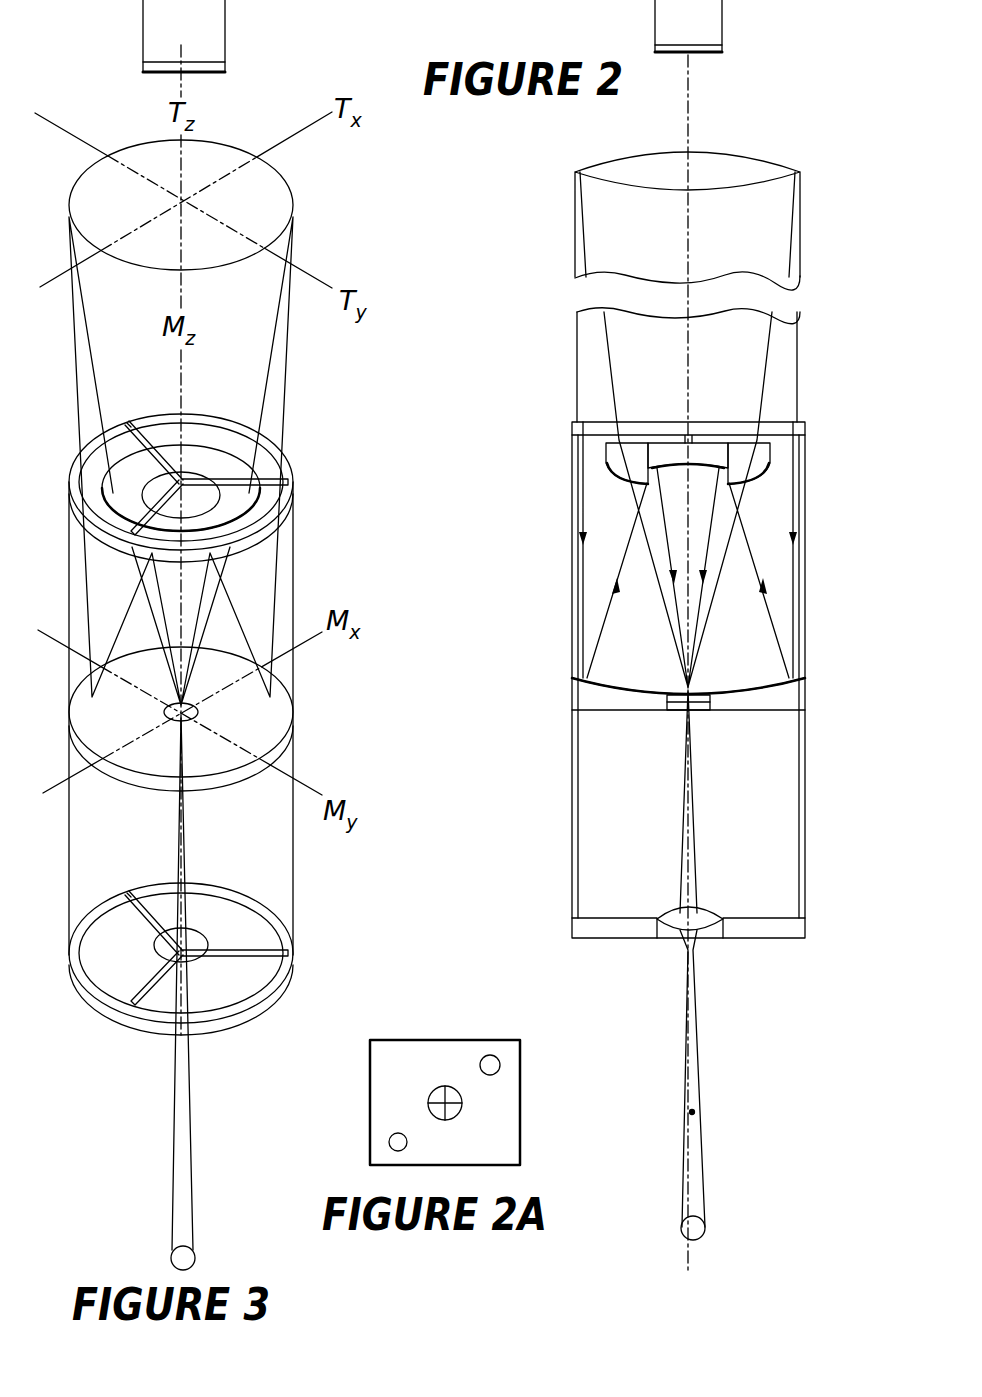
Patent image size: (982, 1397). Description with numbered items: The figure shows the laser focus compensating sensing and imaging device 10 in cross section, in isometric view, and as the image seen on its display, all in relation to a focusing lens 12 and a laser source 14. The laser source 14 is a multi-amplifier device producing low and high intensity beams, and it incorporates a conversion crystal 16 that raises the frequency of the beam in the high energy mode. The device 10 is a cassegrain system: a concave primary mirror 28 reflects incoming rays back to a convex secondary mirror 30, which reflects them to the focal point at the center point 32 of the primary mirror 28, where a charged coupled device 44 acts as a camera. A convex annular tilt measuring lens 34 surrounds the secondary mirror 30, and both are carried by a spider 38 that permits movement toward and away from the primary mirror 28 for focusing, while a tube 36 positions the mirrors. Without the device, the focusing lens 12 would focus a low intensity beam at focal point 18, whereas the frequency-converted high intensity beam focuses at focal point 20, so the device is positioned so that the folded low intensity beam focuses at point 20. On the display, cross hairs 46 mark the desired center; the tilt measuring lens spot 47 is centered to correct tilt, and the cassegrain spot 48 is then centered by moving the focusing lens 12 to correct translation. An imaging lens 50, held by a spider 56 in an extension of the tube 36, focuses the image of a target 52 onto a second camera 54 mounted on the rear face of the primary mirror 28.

In FIG. 2, the laser focus compensating sensing and imaging device 10 is at (647, 672).
In FIG. 3, the focusing lens 12 is at (272, 212).
In FIG. 2, the focusing lens 12 is at (737, 163).
In FIG. 3, the laser source 14 is at (150, 18).
In FIG. 2, the laser source 14 is at (648, 8).
In FIG. 3, the conversion crystal 16 is at (228, 68).
In FIG. 2, the conversion crystal 16 is at (717, 50).
In FIG. 2, the focal point 18 is at (694, 1112).
In FIG. 2, the focal point 20 is at (684, 690).
In FIG. 3, the primary mirror 28 is at (250, 727).
In FIG. 2, the primary mirror 28 is at (580, 695).
In FIG. 3, the secondary mirror 30 is at (197, 498).
In FIG. 2, the secondary mirror 30 is at (700, 470).
In FIG. 3, the center point 32 is at (198, 708).
In FIG. 2, the center point 32 is at (700, 713).
In FIG. 3, the tilt measuring lens 34 is at (125, 493).
In FIG. 2, the tilt measuring lens 34 is at (620, 470).
In FIG. 2, the tube 36 is at (572, 625).
In FIG. 3, the spider 38 is at (279, 467).
In FIG. 2, the spider 38 is at (600, 427).
In FIG. 2, the charged coupled device 44 is at (702, 690).
In FIG. 2A, the cross hairs 46 is at (437, 1093).
In FIG. 2A, the focus spot of the tilt measuring lens 47 is at (490, 1066).
In FIG. 2A, the cassegrain focal spot 48 is at (396, 1142).
In FIG. 3, the imaging lens 50 is at (200, 943).
In FIG. 2, the imaging lens 50 is at (678, 913).
In FIG. 3, the target 52 is at (188, 1256).
In FIG. 2, the target 52 is at (705, 1225).
In FIG. 2, the second camera 54 is at (670, 713).
In FIG. 2A, the second camera 54 is at (445, 1102).
In FIG. 3, the spider 56 is at (137, 982).
In FIG. 2, the spider 56 is at (610, 928).